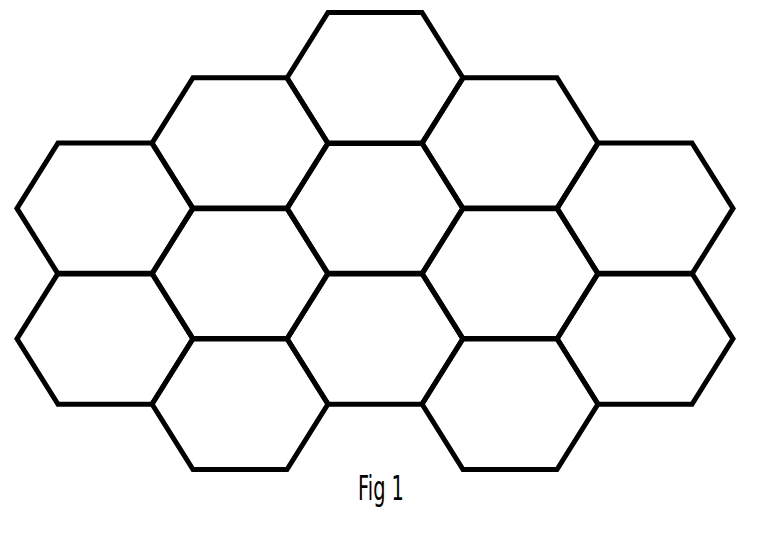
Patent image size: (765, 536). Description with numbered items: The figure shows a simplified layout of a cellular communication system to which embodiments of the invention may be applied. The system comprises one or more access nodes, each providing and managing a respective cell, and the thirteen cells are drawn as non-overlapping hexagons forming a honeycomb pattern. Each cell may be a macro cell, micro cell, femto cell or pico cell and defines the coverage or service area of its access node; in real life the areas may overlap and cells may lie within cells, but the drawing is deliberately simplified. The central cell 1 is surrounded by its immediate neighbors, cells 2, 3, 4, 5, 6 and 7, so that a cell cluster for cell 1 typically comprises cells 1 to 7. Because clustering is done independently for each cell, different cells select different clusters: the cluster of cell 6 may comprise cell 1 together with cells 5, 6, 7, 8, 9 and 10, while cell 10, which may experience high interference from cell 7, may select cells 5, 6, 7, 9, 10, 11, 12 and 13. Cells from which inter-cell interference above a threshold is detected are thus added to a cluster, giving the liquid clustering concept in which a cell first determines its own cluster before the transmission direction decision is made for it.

The cell 1 is at (240, 273).
The cell 2 is at (105, 208).
The cell 3 is at (105, 338).
The cell 4 is at (240, 404).
The cell 5 is at (375, 338).
The cell 6 is at (375, 208).
The cell 7 is at (240, 143).
The cell 8 is at (375, 78).
The cell 9 is at (510, 143).
The cell 10 is at (510, 273).
The cell 11 is at (510, 404).
The cell 12 is at (645, 208).
The cell 13 is at (645, 338).